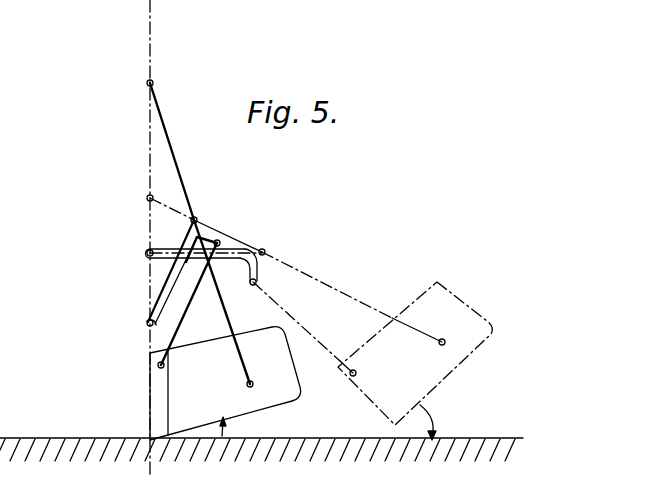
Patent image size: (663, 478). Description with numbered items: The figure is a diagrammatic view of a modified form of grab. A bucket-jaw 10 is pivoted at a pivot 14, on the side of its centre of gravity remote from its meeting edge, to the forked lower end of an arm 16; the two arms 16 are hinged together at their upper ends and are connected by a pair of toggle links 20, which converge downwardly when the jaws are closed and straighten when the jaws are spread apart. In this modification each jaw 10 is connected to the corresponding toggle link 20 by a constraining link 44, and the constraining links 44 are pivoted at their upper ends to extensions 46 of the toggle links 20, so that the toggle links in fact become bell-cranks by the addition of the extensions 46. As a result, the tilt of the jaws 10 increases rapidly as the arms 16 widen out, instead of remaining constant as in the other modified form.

The bucket-jaw 10 is at (283, 397).
The pivot 14 is at (247, 385).
The arm 16 is at (175, 160).
The toggle link 20 is at (167, 280).
The constraining link 44 is at (176, 333).
The extension 46 is at (206, 230).